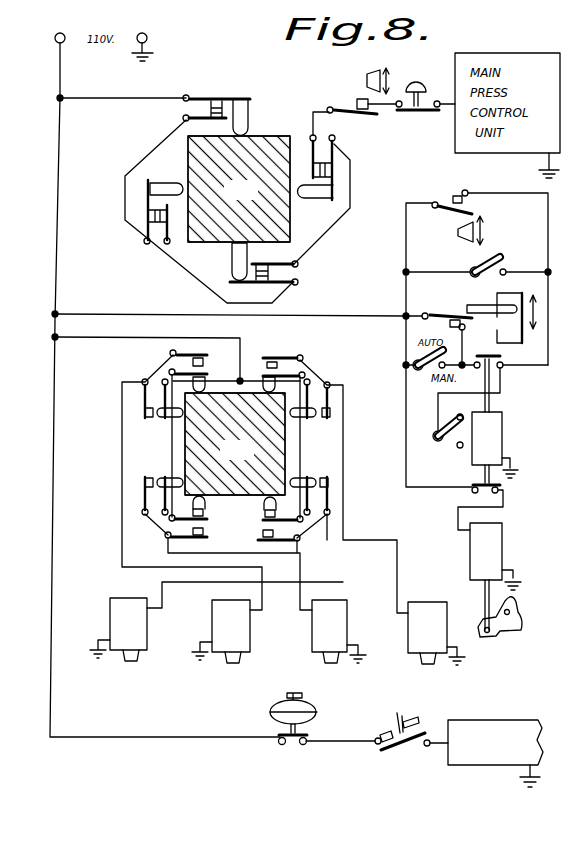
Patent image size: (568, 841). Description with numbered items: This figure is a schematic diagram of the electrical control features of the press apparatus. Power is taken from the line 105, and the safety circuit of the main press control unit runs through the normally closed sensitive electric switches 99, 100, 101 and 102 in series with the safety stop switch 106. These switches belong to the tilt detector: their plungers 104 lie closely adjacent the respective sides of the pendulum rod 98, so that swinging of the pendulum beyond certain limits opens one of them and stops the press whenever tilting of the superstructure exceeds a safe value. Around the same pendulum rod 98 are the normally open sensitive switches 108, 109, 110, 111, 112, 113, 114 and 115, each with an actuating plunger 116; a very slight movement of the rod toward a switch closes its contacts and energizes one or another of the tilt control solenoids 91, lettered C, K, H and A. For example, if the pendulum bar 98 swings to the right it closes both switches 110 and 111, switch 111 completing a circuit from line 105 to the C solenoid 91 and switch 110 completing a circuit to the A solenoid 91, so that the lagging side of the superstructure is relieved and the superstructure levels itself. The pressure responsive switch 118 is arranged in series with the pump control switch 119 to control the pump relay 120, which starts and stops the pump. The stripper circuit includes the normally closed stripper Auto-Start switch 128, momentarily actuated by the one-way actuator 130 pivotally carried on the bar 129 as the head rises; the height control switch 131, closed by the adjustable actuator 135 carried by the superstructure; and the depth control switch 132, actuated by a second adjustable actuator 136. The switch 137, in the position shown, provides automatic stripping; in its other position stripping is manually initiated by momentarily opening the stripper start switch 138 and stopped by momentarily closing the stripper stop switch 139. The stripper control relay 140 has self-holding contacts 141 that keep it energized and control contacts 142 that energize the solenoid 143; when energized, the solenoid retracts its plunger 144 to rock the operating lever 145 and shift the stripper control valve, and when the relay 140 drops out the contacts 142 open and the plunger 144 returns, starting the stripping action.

The tilt control solenoid 91 is at (277, 631).
The pendulum rod 98 is at (256, 198).
The sensitive electric switch 99 is at (280, 281).
The sensitive electric switch 100 is at (341, 155).
The sensitive electric switch 101 is at (183, 100).
The sensitive electric switch 102 is at (160, 245).
The switch plunger 104 is at (243, 120).
The line 105 is at (60, 80).
The safety stop switch 106 is at (440, 84).
The sensitive electrical switch 108 is at (176, 540).
The sensitive electrical switch 109 is at (255, 537).
The sensitive electrical switch 110 is at (327, 501).
The sensitive electrical switch 111 is at (327, 404).
The sensitive electrical switch 112 is at (293, 345).
The sensitive electrical switch 113 is at (183, 352).
The sensitive electrical switch 114 is at (145, 401).
The sensitive electrical switch 115 is at (145, 500).
The actuating plunger 116 is at (262, 510).
The pressure responsive switch 118 is at (308, 710).
The pump control switch 119 is at (393, 730).
The pump relay 120 is at (521, 713).
The stripper Auto-Start switch 128 is at (443, 310).
The bar 129 is at (500, 333).
The one-way actuator 130 is at (487, 293).
The height control switch 131 is at (447, 189).
The depth control switch 132 is at (342, 106).
The adjustable actuator 135 is at (462, 236).
The second adjustable actuator 136 is at (394, 71).
The switch 137 is at (406, 364).
The stripper start switch 138 is at (447, 438).
The stripper stop switch 139 is at (511, 251).
The stripper control relay 140 is at (487, 436).
The self-holding contacts 141 is at (502, 367).
The control contacts 142 is at (473, 483).
The actuating solenoid 143 is at (483, 553).
The plunger 144 is at (485, 589).
The operating lever 145 is at (488, 637).